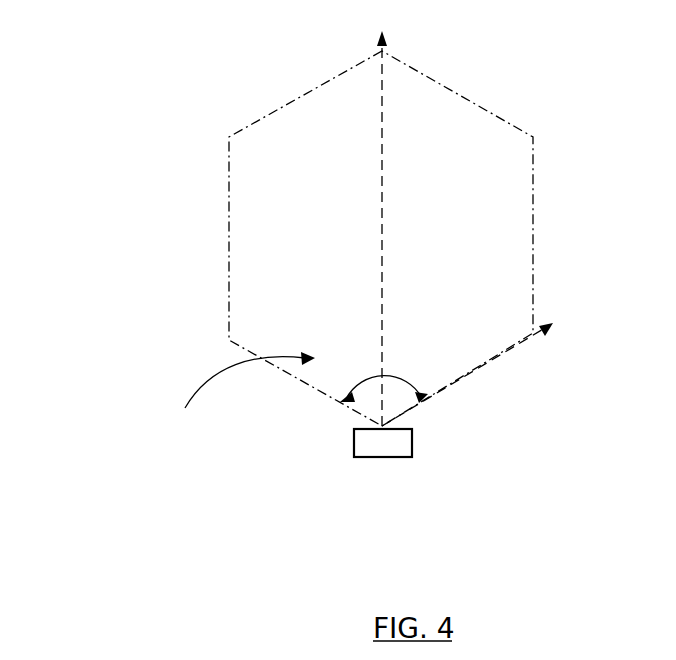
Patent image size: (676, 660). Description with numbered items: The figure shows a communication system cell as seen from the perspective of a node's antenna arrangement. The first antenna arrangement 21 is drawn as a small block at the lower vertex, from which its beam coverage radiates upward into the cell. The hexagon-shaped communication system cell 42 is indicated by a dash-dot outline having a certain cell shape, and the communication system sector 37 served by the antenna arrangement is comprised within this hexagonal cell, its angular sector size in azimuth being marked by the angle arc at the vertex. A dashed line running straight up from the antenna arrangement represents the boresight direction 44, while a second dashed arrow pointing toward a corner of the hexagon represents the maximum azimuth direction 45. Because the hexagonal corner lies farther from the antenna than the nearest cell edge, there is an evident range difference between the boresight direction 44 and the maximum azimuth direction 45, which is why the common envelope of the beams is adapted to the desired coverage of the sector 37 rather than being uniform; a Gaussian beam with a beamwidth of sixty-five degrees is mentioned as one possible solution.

The first antenna arrangement 21 is at (398, 443).
The communication system sector 37 is at (239, 398).
The hexagon-shaped communication system cell 42 is at (227, 190).
The boresight direction 44 is at (382, 158).
The maximum azimuth direction 45 is at (483, 363).